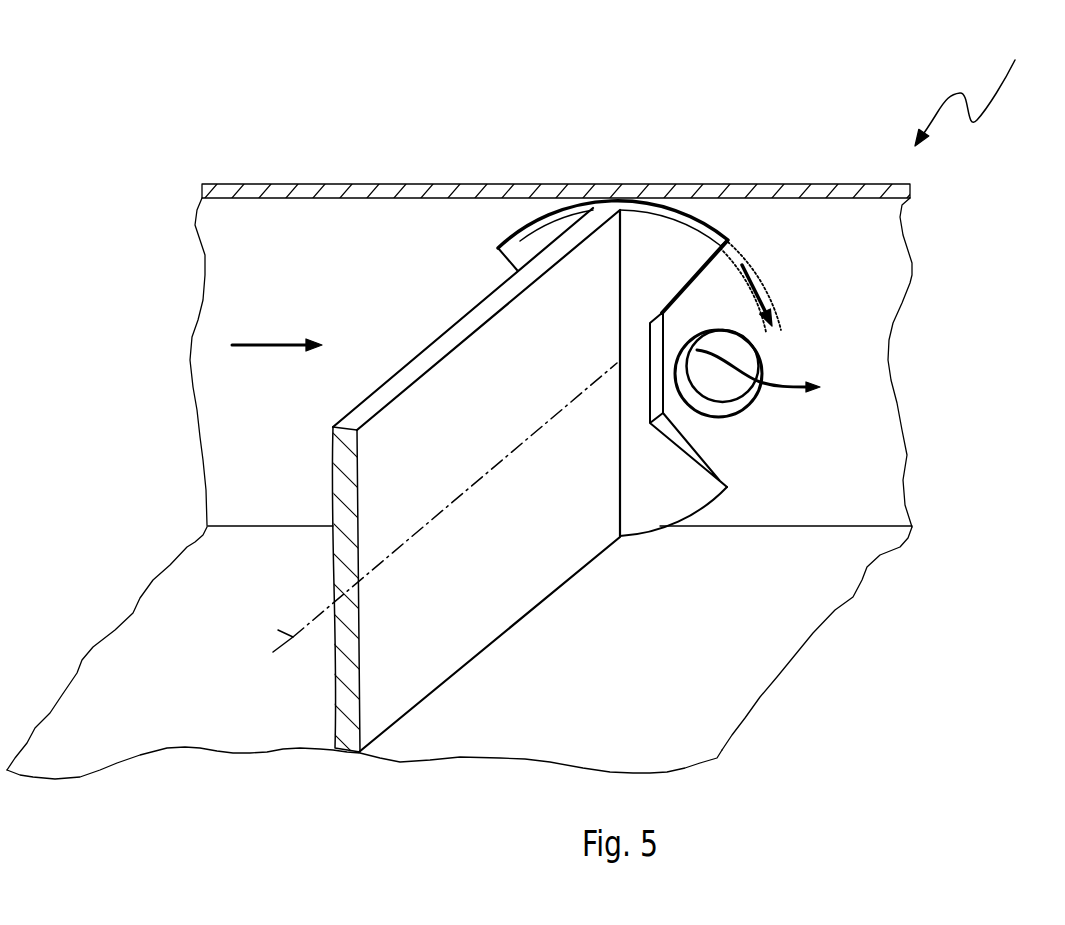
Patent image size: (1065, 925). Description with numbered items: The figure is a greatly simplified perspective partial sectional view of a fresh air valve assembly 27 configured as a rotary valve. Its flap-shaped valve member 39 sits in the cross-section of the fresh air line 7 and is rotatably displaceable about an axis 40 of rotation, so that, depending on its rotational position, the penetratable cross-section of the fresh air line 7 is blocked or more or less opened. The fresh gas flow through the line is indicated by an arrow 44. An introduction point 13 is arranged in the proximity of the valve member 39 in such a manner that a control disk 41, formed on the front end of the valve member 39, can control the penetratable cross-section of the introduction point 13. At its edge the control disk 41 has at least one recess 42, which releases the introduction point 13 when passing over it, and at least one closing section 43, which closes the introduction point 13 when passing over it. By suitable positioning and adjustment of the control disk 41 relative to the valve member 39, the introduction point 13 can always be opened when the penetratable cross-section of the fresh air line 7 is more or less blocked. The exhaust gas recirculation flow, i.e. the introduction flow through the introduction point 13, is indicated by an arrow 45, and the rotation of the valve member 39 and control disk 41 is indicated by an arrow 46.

The fresh air line 7 is at (862, 343).
The introduction point 13 is at (727, 408).
The fresh air valve assembly 27 is at (976, 84).
The valve member 39 is at (480, 615).
The axis of rotation 40 is at (293, 637).
The control disk 41 is at (677, 216).
The recess 42 is at (703, 470).
The closing section 43 is at (660, 497).
The arrow 44 is at (268, 343).
The arrow 45 is at (780, 388).
The arrow 46 is at (760, 282).